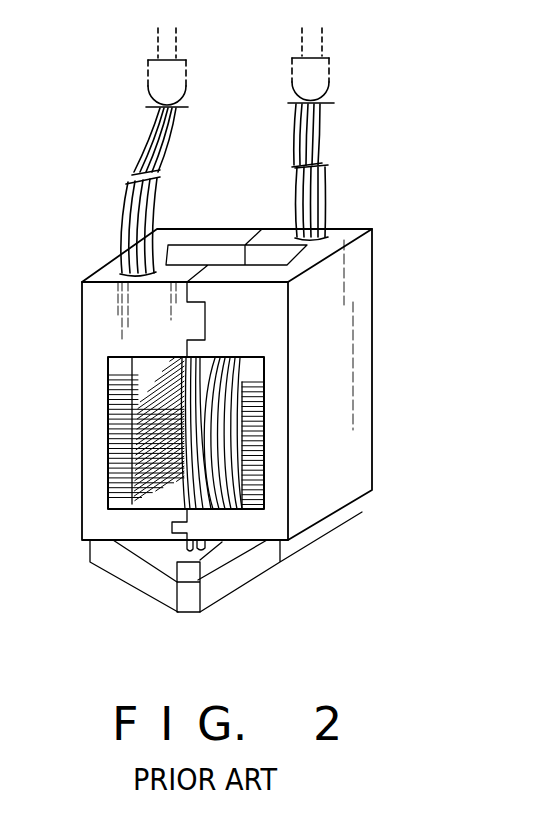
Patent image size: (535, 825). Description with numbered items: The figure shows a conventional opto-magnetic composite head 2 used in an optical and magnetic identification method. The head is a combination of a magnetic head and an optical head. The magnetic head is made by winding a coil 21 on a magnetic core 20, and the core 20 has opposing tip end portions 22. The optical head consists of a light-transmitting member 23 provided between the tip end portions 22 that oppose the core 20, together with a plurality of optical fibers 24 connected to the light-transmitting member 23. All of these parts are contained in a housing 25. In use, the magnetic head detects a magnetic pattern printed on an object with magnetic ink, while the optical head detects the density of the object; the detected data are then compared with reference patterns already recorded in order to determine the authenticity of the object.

The opto-magnetic composite head 2 is at (246, 347).
The magnetic core 20 is at (120, 376).
The coil 21 is at (133, 416).
The tip end portions 22 is at (205, 612).
The light-transmitting member 23 is at (193, 590).
The optical fibers 24 is at (213, 447).
The housing 25 is at (357, 303).